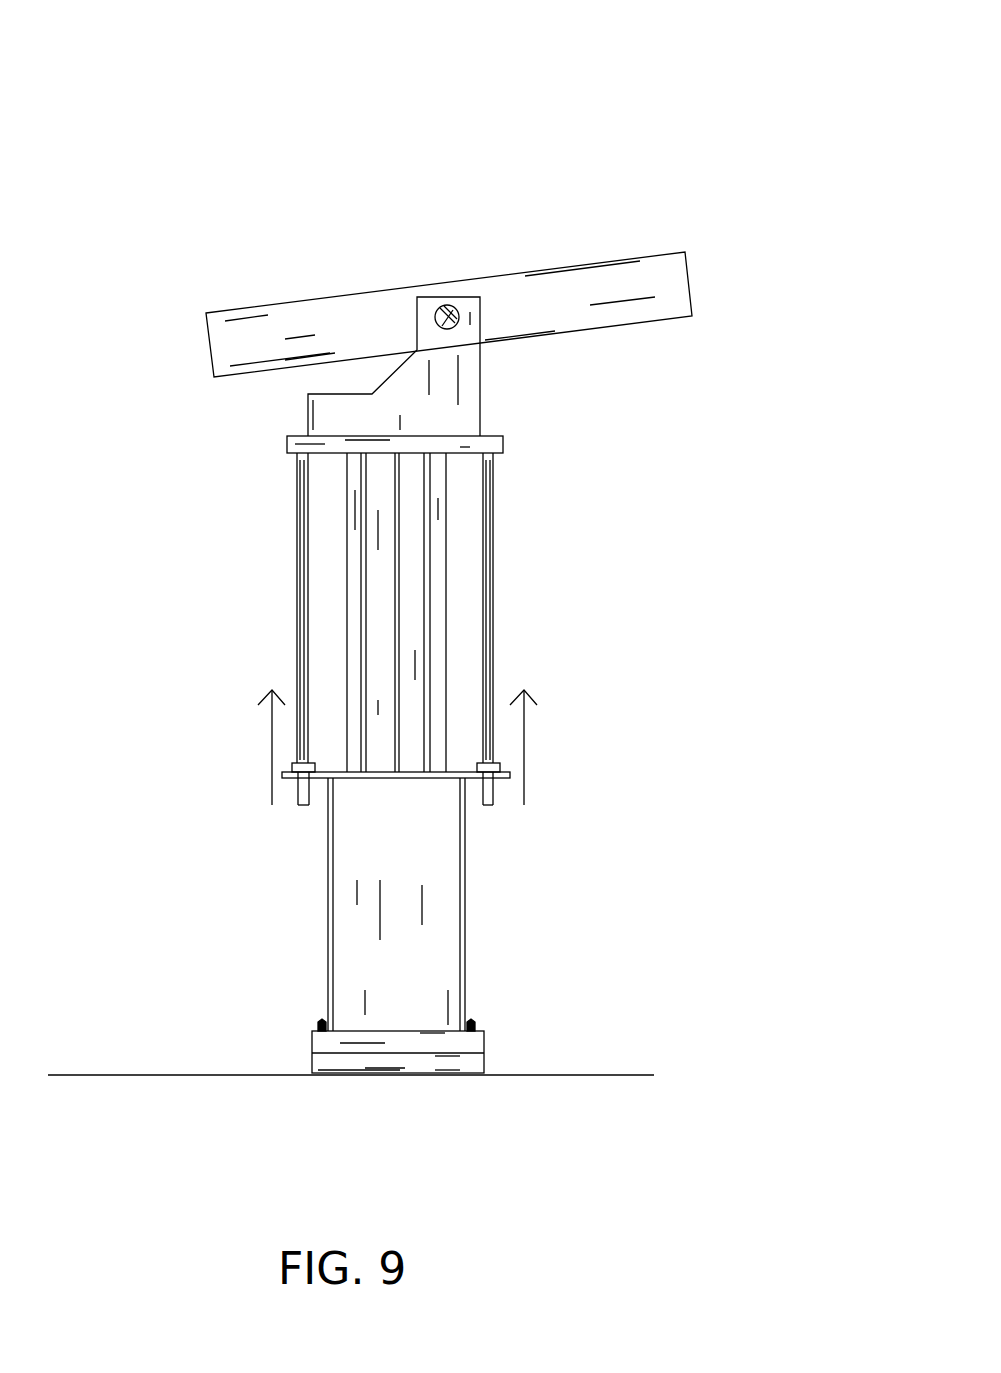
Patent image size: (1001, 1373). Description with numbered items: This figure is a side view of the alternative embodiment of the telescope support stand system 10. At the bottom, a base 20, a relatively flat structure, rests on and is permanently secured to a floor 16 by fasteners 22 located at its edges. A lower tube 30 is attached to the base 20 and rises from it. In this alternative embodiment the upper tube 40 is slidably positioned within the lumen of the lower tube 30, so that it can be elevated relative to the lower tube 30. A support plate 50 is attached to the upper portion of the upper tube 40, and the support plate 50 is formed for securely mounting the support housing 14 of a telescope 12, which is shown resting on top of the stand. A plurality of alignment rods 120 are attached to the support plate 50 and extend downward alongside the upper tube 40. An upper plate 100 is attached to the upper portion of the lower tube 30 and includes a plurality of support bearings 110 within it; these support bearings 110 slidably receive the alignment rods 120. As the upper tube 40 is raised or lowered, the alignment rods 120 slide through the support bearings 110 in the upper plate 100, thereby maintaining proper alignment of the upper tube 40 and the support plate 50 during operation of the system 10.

The telescope support stand system 10 is at (282, 134).
The telescope 12 is at (514, 268).
The support housing 14 is at (467, 388).
The floor 16 is at (624, 1072).
The base 20 is at (440, 1085).
The fasteners 22 is at (317, 1025).
The lower tube 30 is at (350, 995).
The upper tube 40 is at (377, 575).
The support plate 50 is at (495, 447).
The upper plate 100 is at (506, 777).
The support bearings 110 is at (297, 767).
The alignment rods 120 is at (298, 662).